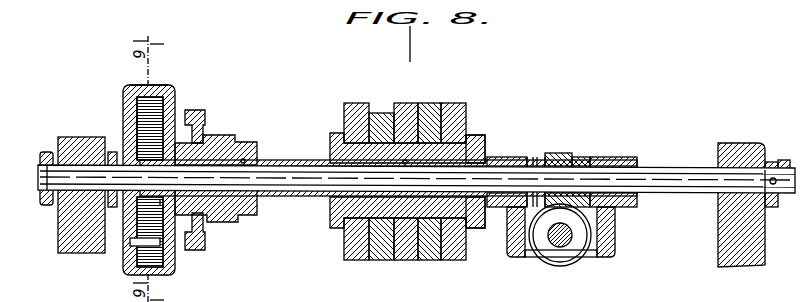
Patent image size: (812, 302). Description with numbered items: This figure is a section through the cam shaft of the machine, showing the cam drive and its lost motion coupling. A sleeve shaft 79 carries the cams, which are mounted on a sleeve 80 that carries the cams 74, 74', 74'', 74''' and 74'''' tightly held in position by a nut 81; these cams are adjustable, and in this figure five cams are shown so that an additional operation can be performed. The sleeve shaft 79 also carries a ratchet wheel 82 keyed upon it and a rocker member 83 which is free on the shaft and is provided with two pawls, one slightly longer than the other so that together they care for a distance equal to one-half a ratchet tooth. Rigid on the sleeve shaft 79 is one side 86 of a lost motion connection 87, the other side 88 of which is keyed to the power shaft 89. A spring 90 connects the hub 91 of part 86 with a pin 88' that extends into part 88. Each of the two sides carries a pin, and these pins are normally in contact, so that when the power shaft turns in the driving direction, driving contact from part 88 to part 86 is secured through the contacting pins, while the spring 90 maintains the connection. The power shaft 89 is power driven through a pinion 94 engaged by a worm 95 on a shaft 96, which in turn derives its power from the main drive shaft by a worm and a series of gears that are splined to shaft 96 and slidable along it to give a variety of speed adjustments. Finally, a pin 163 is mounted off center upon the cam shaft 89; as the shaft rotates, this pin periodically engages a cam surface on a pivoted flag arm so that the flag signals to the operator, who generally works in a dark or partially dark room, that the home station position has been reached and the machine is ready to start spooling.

The cam 74 is at (356, 168).
The cam 74' is at (388, 168).
The cam 74'' is at (419, 168).
The cam 74''' is at (448, 168).
The cam 74'''' is at (476, 177).
The sleeve shaft 79 is at (305, 160).
The sleeve 80 is at (330, 133).
The nut 81 is at (472, 136).
The ratchet wheel 82 is at (241, 137).
The rocker member 83 is at (207, 124).
The side of lost motion connection 86 is at (175, 101).
The lost motion connection 87 is at (147, 85).
The side of lost motion connection 88 is at (126, 122).
The pin 88' is at (125, 242).
The power shaft 89 is at (41, 178).
The spring 90 is at (125, 118).
The hub 91 is at (172, 212).
The pinion 94 is at (565, 158).
The worm 95 is at (570, 253).
The shaft 96 is at (549, 246).
The pin 163 is at (783, 160).